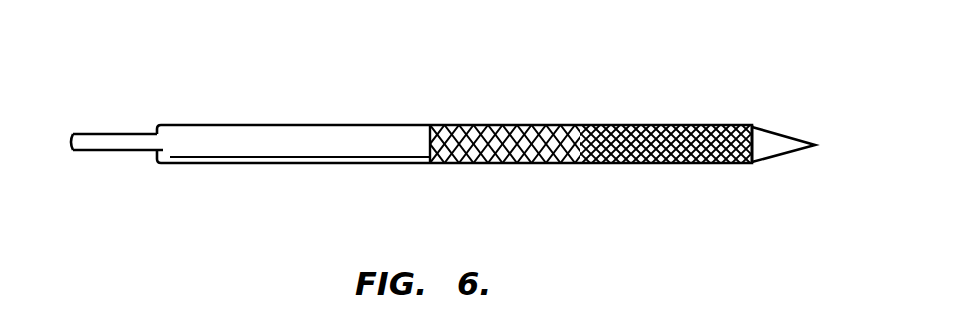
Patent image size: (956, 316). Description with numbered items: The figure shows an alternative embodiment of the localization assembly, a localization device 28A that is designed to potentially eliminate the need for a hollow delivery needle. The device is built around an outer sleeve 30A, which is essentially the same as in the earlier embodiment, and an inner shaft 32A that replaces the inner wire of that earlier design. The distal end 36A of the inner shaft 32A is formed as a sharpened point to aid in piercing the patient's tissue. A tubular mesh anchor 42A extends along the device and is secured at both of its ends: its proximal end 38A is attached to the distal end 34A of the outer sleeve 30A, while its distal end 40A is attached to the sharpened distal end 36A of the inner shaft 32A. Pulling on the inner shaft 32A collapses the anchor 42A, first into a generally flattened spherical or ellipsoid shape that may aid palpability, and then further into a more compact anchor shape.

The localization device 28A is at (627, 42).
The outer sleeve 30A is at (273, 125).
The inner shaft 32A is at (127, 133).
The distal end of outer sleeve 34A is at (415, 140).
The distal end of inner shaft 36A is at (812, 95).
The proximal end of anchor 38A is at (452, 125).
The distal end of anchor 40A is at (733, 163).
The tubular mesh anchor 42A is at (573, 125).